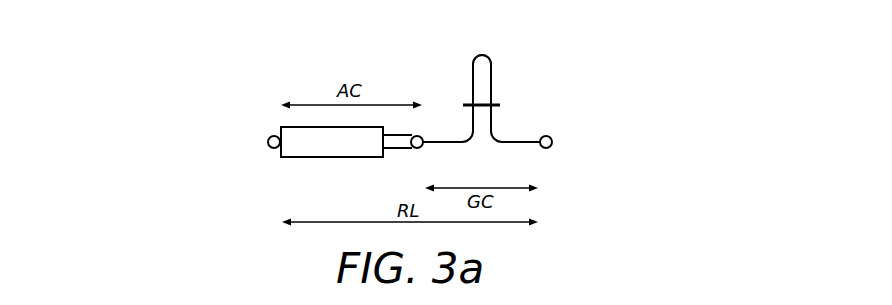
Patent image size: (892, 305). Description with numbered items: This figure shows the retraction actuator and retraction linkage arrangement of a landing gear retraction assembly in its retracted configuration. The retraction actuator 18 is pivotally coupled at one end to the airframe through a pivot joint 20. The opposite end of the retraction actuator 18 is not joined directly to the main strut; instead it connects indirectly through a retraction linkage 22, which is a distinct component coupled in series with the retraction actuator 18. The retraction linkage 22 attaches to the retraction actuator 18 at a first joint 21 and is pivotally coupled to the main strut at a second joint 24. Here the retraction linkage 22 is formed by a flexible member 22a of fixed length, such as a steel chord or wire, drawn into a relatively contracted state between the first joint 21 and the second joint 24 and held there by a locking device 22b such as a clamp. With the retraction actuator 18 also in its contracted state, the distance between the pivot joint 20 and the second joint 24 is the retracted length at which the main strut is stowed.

The retraction actuator 18 is at (333, 157).
The pivot joint 20 is at (268, 142).
The first joint 21 is at (423, 148).
The retraction linkage 22 is at (458, 56).
The flexible member 22a is at (489, 57).
The locking device 22b is at (497, 103).
The second joint 24 is at (553, 142).